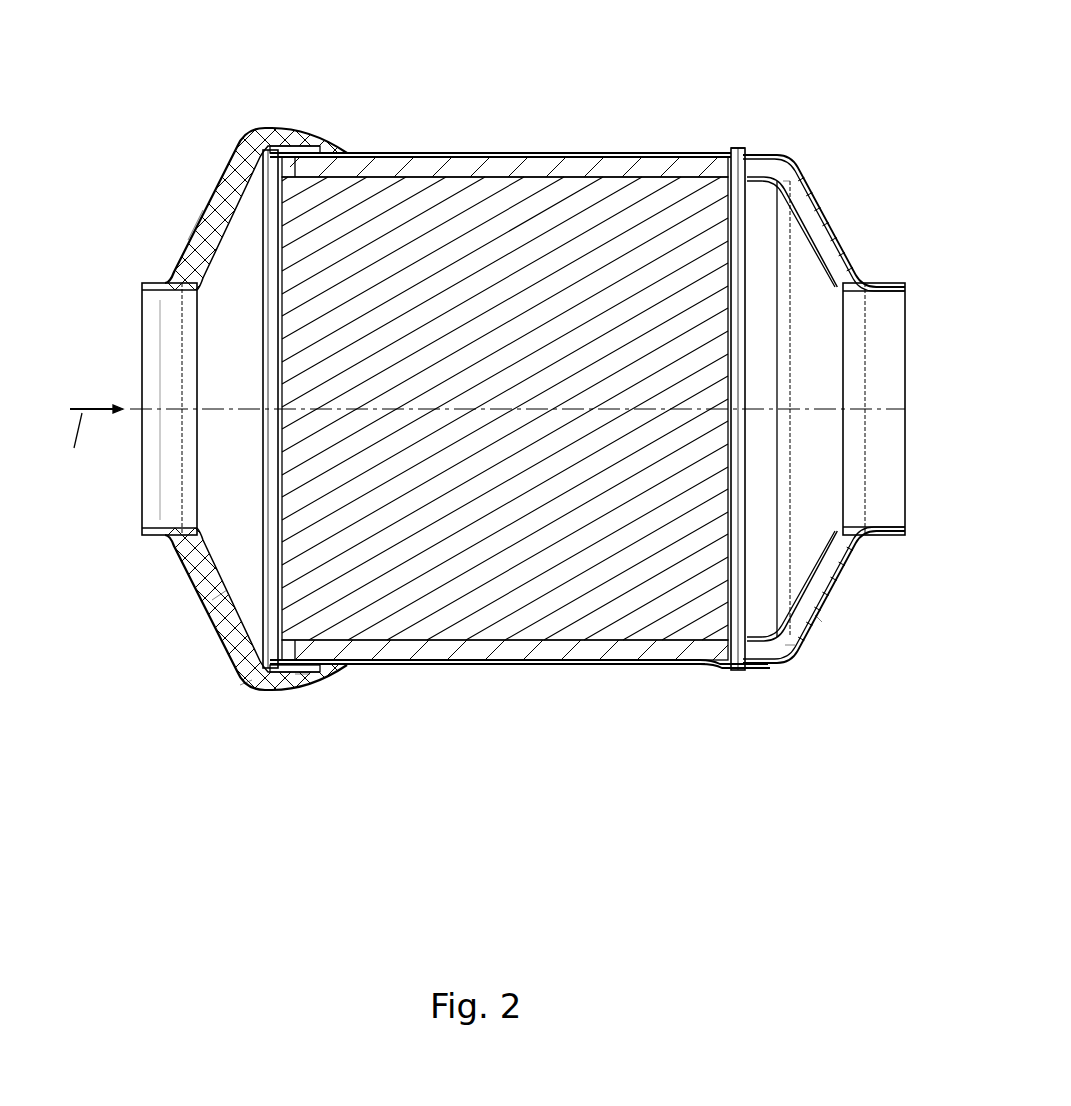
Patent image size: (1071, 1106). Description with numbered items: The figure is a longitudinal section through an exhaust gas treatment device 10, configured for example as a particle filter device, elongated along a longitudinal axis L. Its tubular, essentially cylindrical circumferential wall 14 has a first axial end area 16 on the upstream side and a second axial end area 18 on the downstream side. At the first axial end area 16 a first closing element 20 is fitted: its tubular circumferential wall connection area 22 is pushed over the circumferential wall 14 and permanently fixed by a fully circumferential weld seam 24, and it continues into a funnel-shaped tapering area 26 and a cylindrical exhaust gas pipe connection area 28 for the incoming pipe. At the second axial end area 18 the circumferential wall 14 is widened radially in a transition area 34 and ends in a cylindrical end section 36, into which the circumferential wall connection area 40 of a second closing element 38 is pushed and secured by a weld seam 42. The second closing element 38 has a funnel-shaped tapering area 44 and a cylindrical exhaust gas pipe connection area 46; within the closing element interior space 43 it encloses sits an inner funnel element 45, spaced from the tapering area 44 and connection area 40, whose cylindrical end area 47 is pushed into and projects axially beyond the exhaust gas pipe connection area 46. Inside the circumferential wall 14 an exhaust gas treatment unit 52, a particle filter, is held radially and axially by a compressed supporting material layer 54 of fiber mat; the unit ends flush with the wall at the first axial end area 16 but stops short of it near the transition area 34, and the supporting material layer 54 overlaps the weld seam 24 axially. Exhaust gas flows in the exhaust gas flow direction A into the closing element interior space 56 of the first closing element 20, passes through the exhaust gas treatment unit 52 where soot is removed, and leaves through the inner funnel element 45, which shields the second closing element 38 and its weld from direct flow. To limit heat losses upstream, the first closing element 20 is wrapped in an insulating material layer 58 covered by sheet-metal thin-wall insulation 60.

The exhaust gas treatment device 10 is at (592, 90).
The circumferential wall 14 is at (478, 165).
The first axial end area 16 is at (300, 145).
The second axial end area 18 is at (733, 152).
The first closing element 20 is at (216, 208).
The circumferential wall connection area 22 is at (302, 672).
The weld seam 24 is at (328, 150).
The tapering area 26 is at (227, 600).
The exhaust gas pipe connection area 28 is at (153, 530).
The transition area 34 is at (715, 668).
The end section 36 is at (750, 672).
The second closing element 38 is at (833, 203).
The circumferential wall connection area 40 is at (777, 156).
The weld seam 42 is at (766, 668).
The closing element interior space 43 is at (790, 647).
The tapering area 44 is at (818, 613).
The inner funnel element 45 is at (805, 182).
The exhaust gas pipe connection area 46 is at (875, 540).
The end area 47 is at (890, 320).
The exhaust gas treatment unit 52 is at (405, 598).
The supporting material layer 54 is at (395, 168).
The closing element interior space 56 is at (223, 323).
The insulating material layer 58 is at (193, 243).
The thin-wall insulation 60 is at (245, 682).
The exhaust gas flow direction A is at (81, 455).
The longitudinal axis L is at (872, 412).